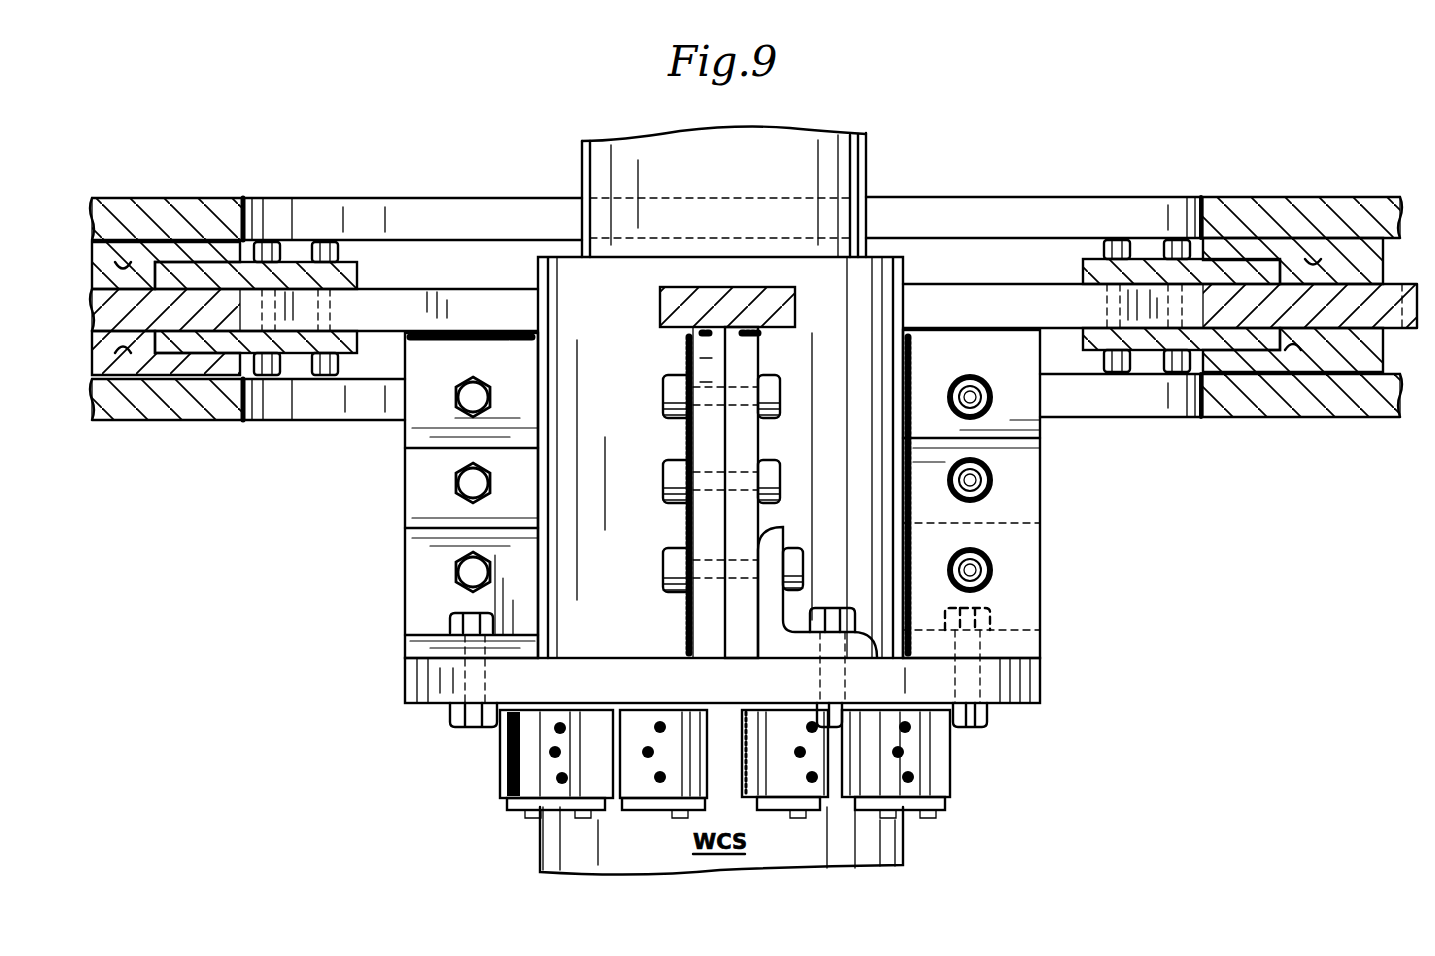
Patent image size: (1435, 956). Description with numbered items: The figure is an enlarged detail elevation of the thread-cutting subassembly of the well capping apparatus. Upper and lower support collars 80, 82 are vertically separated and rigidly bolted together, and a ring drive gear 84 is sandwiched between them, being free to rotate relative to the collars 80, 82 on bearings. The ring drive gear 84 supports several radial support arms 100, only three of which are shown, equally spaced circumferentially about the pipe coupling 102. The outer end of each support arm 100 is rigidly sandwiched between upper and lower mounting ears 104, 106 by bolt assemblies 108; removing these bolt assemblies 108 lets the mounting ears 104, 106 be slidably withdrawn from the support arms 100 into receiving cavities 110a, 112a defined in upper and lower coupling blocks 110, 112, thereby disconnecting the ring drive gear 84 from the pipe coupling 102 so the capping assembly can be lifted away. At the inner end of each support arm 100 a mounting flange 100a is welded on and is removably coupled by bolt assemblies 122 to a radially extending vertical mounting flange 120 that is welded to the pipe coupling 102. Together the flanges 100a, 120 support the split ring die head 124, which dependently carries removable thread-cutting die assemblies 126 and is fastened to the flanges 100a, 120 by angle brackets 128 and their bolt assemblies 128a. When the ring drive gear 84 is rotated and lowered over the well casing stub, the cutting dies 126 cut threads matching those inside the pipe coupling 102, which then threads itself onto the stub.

The upper support collar 80 is at (464, 227).
The lower support collar 82 is at (383, 409).
The ring drive gear 84 is at (152, 323).
The radial support arm 100 is at (408, 315).
The mounting flange 100a is at (456, 418).
The pipe coupling 102 is at (846, 312).
The upper mounting ear 104 is at (357, 273).
The lower mounting ear 106 is at (345, 350).
The bolt assembly 108 is at (322, 242).
The upper coupling block 110 is at (195, 250).
The receiving cavity 110a is at (115, 252).
The lower coupling block 112 is at (186, 360).
The receiving cavity 112a is at (118, 356).
The vertical mounting flange 120 is at (700, 352).
The bolt assembly 122 is at (481, 382).
The split ring die head 124 is at (678, 693).
The thread-cutting die assembly 126 is at (500, 772).
The angle bracket 128 is at (446, 571).
The bolt assembly 128a is at (455, 615).